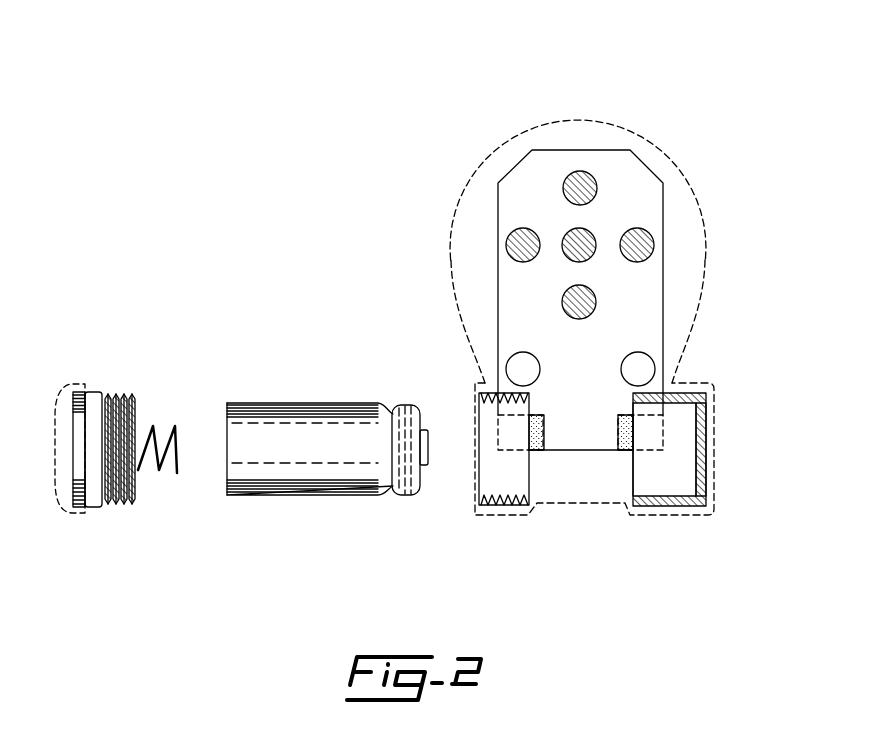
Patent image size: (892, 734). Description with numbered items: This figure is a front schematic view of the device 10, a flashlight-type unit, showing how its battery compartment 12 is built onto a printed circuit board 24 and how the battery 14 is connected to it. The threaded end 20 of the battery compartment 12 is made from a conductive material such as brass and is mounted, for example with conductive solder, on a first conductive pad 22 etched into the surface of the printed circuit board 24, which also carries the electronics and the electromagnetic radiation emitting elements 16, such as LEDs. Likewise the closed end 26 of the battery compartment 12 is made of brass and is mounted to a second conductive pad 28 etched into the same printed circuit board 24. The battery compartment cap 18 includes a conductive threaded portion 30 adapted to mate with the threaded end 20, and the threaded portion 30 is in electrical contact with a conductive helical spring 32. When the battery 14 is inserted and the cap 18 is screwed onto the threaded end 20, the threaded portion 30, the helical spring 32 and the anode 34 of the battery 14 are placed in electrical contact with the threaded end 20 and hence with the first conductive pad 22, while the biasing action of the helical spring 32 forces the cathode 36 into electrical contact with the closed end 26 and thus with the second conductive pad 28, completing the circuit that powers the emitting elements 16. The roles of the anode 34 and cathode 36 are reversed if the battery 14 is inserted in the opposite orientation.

The device 10 is at (703, 157).
The battery compartment 12 is at (667, 517).
The battery 14 is at (318, 477).
The electromagnetic radiation emitting elements 16 is at (632, 240).
The battery compartment cap 18 is at (63, 400).
The threaded end 20 is at (480, 487).
The first conductive pad 22 is at (537, 443).
The printed circuit board 24 is at (498, 307).
The closed end 26 is at (697, 442).
The second conductive pad 28 is at (625, 443).
The threaded portion 30 is at (120, 502).
The conductive helical spring 32 is at (157, 467).
The anode 34 is at (227, 418).
The cathode 36 is at (428, 448).